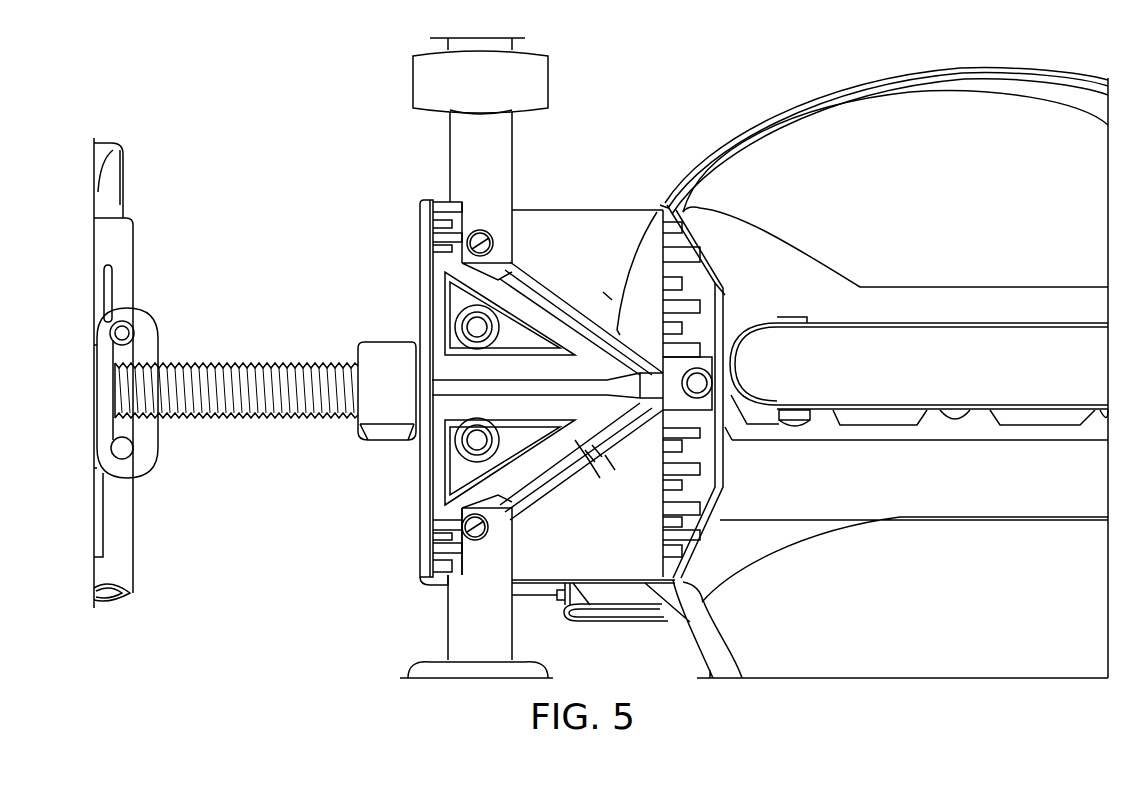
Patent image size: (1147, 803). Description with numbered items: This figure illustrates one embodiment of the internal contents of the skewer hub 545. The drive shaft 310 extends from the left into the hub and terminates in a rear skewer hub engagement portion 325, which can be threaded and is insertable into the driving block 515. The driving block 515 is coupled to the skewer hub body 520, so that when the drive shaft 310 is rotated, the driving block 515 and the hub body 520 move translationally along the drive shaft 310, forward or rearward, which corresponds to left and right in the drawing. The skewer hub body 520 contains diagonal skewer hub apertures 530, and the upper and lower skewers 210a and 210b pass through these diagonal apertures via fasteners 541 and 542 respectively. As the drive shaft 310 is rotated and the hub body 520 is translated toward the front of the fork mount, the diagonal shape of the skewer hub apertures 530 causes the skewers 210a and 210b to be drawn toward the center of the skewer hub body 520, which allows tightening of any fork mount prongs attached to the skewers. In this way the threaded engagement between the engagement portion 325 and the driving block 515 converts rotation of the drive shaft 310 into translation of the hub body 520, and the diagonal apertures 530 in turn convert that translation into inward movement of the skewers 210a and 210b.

The skewer 210a is at (449, 137).
The skewer 210b is at (448, 612).
The drive shaft 310 is at (178, 338).
The skewer hub engagement portion 325 is at (278, 362).
The driving block 515 is at (390, 344).
The skewer hub body 520 is at (590, 228).
The skewer hub apertures 530 is at (664, 212).
The fastener 541 is at (483, 236).
The fastener 542 is at (466, 531).
The skewer hub 545 is at (630, 186).